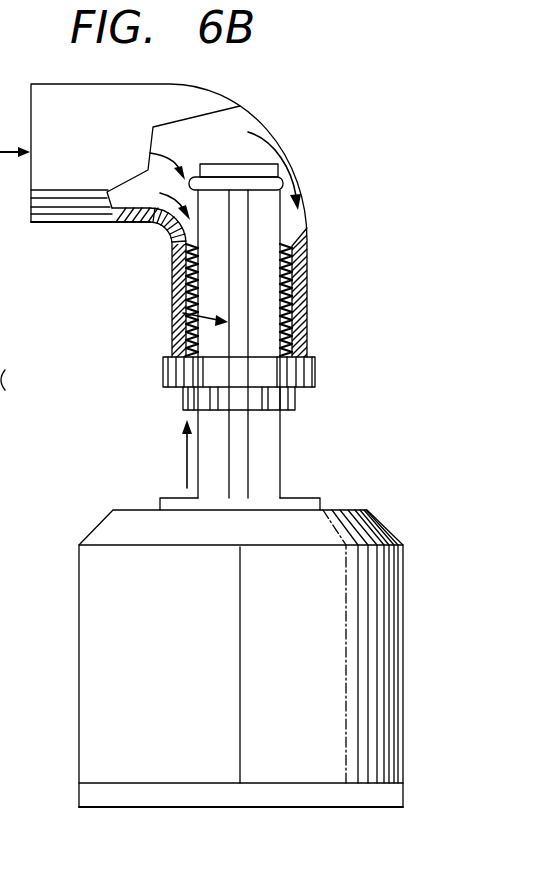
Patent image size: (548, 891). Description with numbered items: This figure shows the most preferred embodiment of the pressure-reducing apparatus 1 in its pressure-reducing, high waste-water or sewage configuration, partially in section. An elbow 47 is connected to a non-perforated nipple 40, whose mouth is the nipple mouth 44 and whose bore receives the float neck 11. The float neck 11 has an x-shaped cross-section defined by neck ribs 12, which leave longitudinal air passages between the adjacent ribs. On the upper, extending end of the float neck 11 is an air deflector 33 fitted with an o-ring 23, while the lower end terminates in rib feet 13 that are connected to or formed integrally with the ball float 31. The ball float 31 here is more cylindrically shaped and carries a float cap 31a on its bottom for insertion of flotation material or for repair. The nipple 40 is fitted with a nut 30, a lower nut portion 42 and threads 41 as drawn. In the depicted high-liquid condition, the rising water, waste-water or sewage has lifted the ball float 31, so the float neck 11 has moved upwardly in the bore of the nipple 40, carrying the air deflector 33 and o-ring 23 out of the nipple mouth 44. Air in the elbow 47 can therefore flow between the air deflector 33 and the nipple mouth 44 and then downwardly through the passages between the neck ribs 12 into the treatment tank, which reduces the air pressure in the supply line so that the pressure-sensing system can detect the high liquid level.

The pressure-reducing apparatus 1 is at (126, 266).
The float neck 11 is at (197, 302).
The neck ribs 12 is at (240, 263).
The rib feet 13 is at (163, 497).
The o-ring 23 is at (284, 180).
The nut 30 is at (325, 383).
The ball float 31 is at (322, 662).
The float cap 31a is at (342, 793).
The air deflector 33 is at (260, 167).
The non-perforated nipple 40 is at (320, 330).
The threads 41 is at (190, 328).
The lower nut portion 42 is at (163, 373).
The nipple mouth 44 is at (158, 228).
The elbow 47 is at (52, 228).